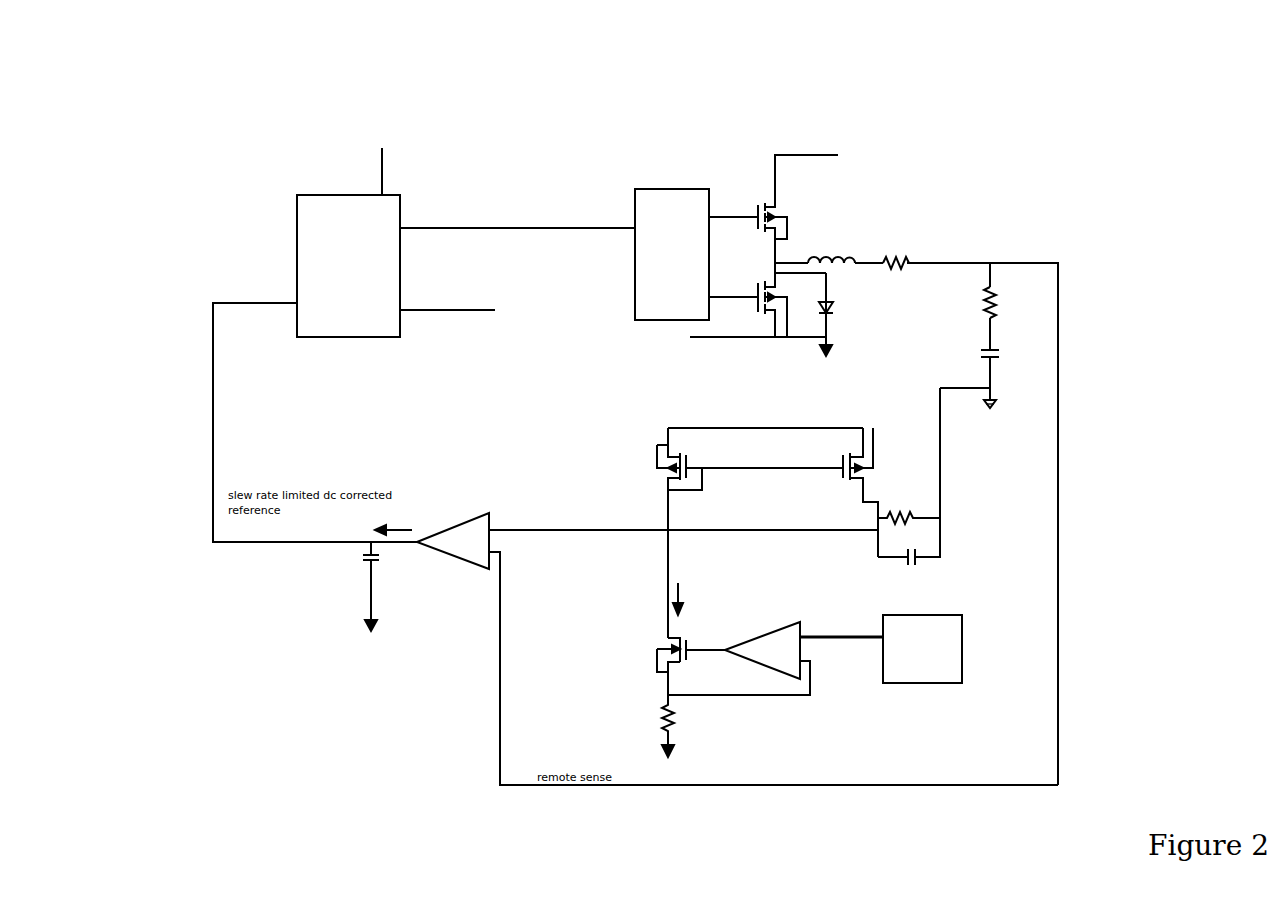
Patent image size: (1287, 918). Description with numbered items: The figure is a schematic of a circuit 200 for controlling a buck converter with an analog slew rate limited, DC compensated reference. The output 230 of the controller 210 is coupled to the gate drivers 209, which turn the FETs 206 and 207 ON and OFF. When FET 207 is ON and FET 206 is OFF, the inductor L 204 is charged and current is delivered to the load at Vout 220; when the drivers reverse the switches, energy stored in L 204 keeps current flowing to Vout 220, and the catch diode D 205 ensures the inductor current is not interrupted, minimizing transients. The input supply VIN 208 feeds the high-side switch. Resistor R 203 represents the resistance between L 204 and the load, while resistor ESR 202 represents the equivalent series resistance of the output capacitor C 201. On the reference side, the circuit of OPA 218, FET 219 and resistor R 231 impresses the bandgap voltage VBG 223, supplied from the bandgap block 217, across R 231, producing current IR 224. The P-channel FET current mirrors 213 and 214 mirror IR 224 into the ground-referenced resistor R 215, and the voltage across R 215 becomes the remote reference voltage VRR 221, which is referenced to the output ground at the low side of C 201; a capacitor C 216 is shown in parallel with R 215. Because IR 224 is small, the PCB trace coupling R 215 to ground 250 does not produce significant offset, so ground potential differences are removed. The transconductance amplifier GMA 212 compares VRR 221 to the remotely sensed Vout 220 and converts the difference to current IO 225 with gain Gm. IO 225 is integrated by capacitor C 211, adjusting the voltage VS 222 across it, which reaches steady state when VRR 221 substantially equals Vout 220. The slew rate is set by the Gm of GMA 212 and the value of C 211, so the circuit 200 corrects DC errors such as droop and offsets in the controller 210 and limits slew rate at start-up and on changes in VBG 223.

The circuit 200 is at (690, 88).
The capacitor C 201 is at (998, 352).
The resistor ESR 202 is at (996, 298).
The resistor R 203 is at (893, 243).
The inductor L 204 is at (829, 247).
The catch diode D 205 is at (838, 308).
The FET 206 is at (776, 285).
The FET 207 is at (778, 208).
The input voltage VIN 208 is at (858, 119).
The gate drivers 209 is at (672, 188).
The controller 210 is at (347, 178).
The capacitor C 211 is at (354, 563).
The transconductance amplifier GMA 212 is at (440, 555).
The P-channel FET current mirror 213 is at (662, 477).
The P-channel FET current mirror 214 is at (876, 460).
The resistor R 215 is at (906, 513).
The capacitor C 216 is at (929, 561).
The bandgap reference 217 is at (920, 684).
The OPA 218 is at (744, 640).
The FET 219 is at (660, 656).
The Vout 220 is at (468, 313).
The remote reference voltage VRR 221 is at (606, 538).
The voltage VS 222 is at (225, 414).
The bandgap voltage VBG 223 is at (842, 636).
The current IR 224 is at (690, 589).
The current IO 225 is at (424, 500).
The output 230 is at (470, 226).
The resistor R 231 is at (677, 714).
The ground 250 is at (1004, 395).